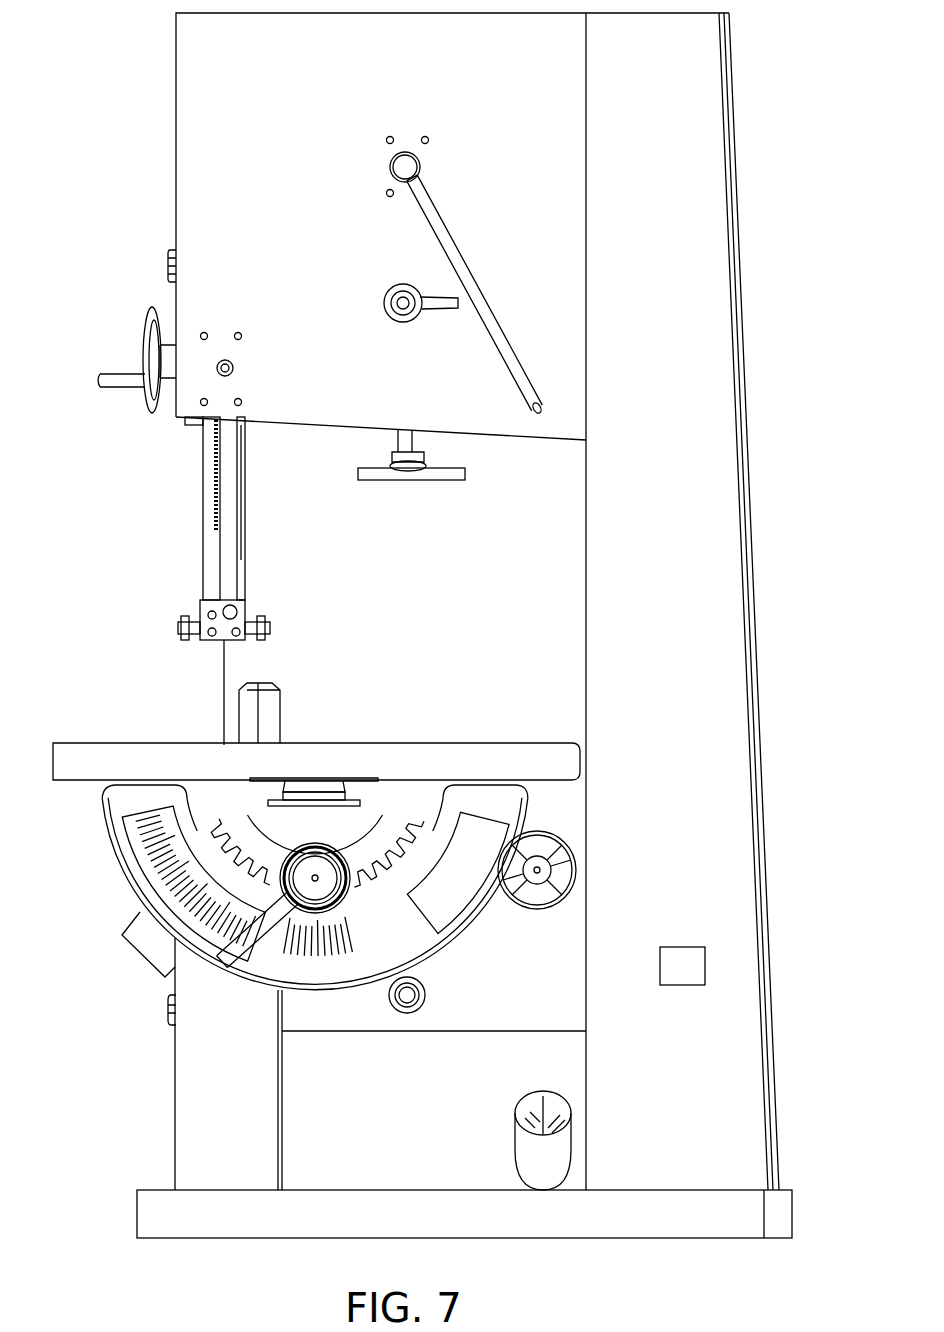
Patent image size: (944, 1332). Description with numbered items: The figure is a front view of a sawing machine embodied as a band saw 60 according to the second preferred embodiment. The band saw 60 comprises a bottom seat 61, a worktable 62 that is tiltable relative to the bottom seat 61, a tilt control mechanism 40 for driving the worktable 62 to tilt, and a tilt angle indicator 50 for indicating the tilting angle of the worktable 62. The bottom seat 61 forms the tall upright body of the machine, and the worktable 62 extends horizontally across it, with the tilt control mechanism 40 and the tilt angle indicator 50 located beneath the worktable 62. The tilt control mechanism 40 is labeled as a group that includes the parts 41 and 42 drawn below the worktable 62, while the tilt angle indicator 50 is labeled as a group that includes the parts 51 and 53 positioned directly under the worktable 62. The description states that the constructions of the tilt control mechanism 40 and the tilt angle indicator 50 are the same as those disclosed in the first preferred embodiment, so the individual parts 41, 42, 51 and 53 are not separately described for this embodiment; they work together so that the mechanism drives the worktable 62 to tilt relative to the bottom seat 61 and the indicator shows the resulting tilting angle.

The band saw 60 is at (777, 415).
The bottom seat 61 is at (610, 607).
The worktable 62 is at (500, 752).
The tilt angle indicator 50 is at (202, 697).
The locking member 51 is at (297, 785).
The slide plate 53 is at (283, 797).
The tilt control mechanism 40 is at (505, 897).
The adjusting wheel 41 is at (484, 848).
The indicator hub 42 is at (335, 880).